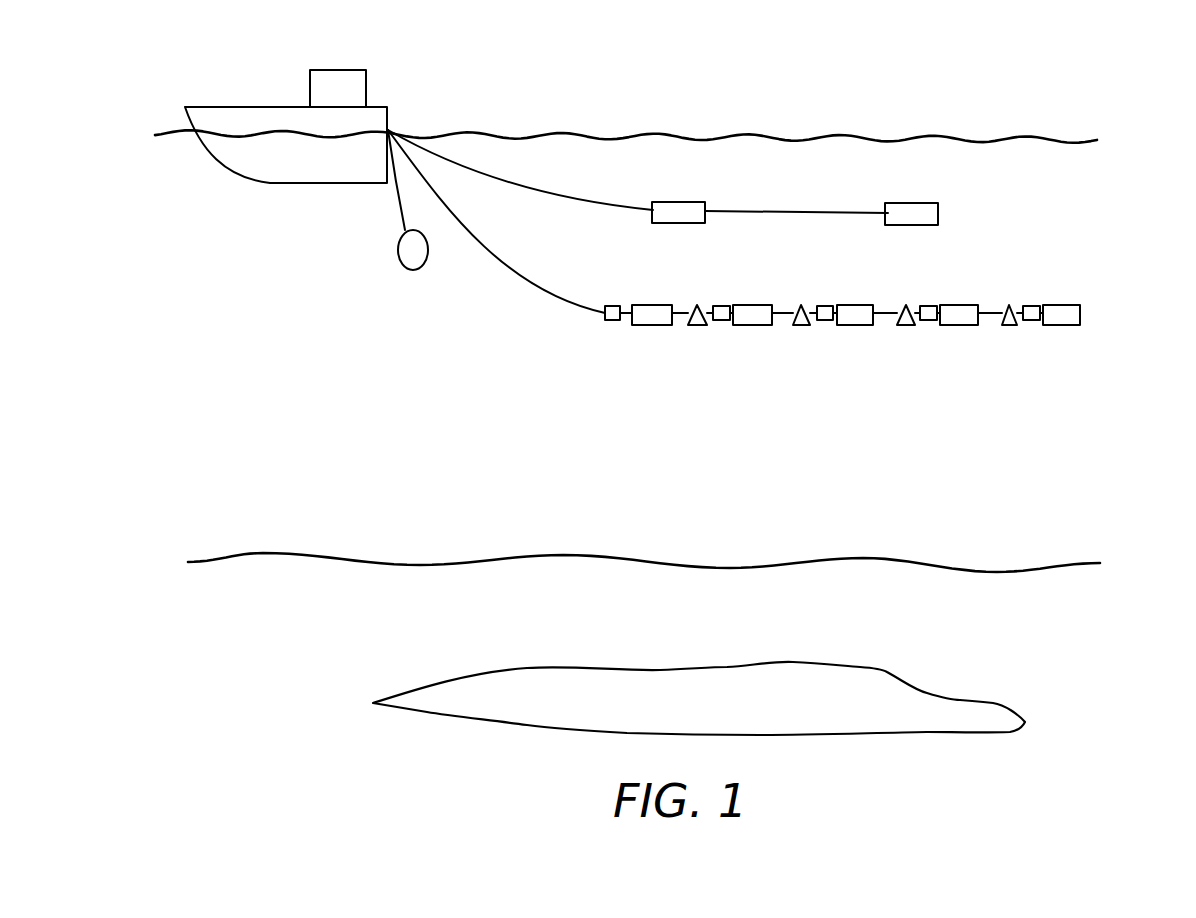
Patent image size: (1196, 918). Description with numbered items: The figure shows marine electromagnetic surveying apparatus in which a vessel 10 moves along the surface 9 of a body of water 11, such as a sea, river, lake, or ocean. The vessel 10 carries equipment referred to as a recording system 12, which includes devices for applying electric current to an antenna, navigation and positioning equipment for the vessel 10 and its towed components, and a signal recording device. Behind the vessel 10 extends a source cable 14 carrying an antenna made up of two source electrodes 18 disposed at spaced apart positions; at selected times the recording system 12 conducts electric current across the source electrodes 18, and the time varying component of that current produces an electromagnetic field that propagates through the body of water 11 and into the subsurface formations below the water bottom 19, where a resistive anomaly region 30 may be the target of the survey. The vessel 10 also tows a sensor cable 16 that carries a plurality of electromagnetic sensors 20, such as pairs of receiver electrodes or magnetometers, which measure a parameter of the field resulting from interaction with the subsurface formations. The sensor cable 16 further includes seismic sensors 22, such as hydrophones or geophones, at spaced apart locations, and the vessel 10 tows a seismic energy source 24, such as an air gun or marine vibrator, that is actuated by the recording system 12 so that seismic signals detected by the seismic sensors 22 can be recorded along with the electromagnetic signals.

The surface 9 is at (1015, 140).
The vessel 10 is at (237, 103).
The body of water 11 is at (283, 344).
The recording system 12 is at (337, 70).
The source cable 14 is at (547, 200).
The sensor cable 16 is at (500, 272).
The source electrodes 18 is at (677, 223).
The water bottom 19 is at (447, 565).
The electromagnetic sensors 20 is at (652, 327).
The seismic sensors 22 is at (697, 327).
The seismic energy source 24 is at (413, 272).
The resistive anomaly region 30 is at (699, 698).